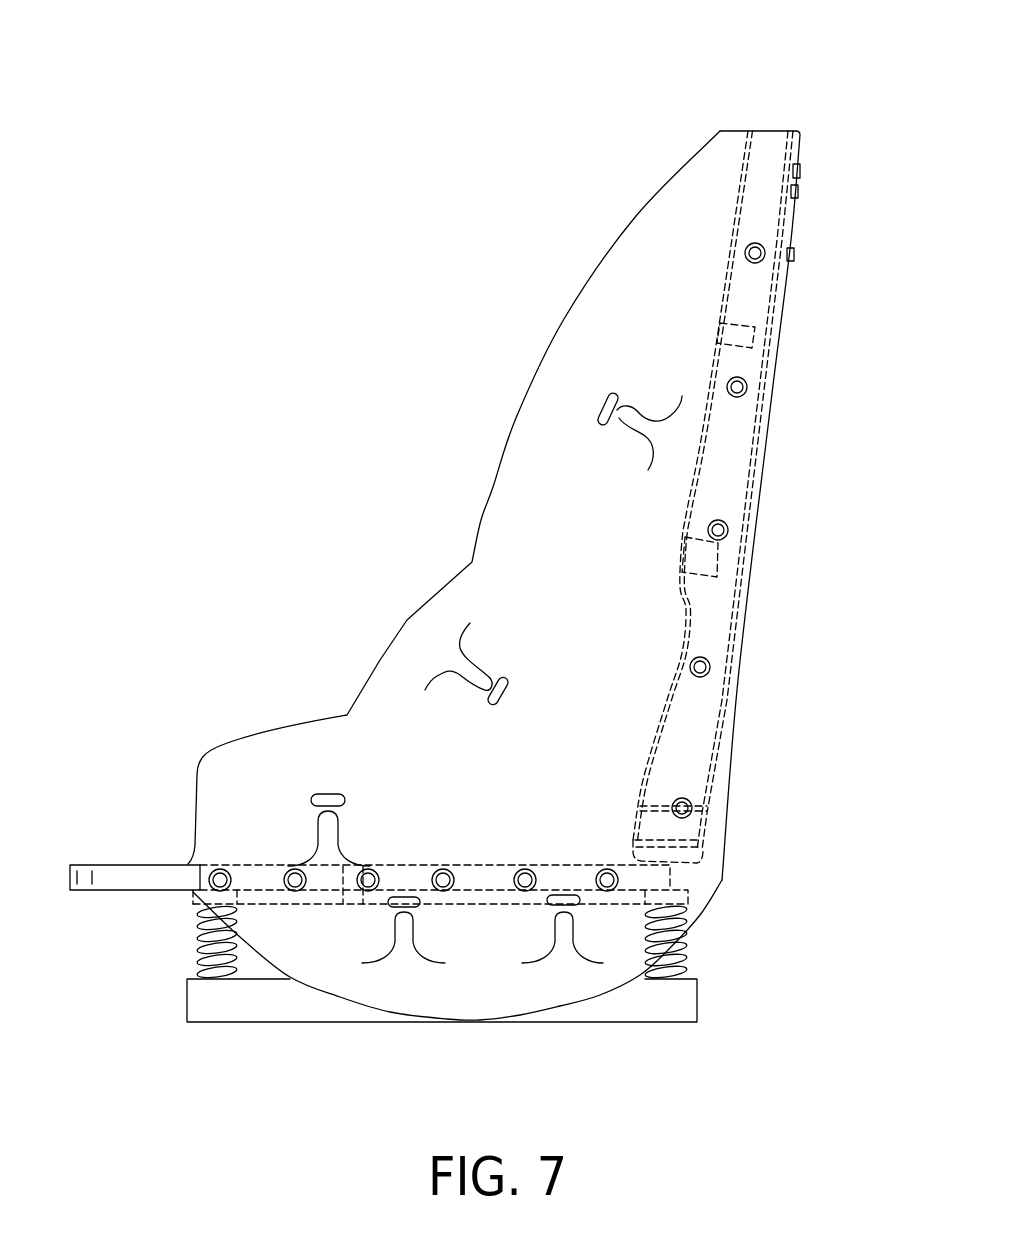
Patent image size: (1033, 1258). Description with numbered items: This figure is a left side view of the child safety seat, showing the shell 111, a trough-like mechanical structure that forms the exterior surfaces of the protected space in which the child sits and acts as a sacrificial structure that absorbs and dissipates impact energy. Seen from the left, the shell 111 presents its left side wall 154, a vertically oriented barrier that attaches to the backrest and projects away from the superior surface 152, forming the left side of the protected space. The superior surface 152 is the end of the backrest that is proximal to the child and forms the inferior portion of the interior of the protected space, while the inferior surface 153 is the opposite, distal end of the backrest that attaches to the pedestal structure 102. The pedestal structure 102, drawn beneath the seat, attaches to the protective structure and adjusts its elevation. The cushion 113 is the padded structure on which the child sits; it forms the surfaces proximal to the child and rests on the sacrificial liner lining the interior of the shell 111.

The shell 111 is at (340, 144).
The left side wall 154 is at (513, 537).
The cushion 113 is at (653, 713).
The inferior surface 153 is at (130, 865).
The superior surface 152 is at (133, 890).
The pedestal structure 102 is at (683, 1003).